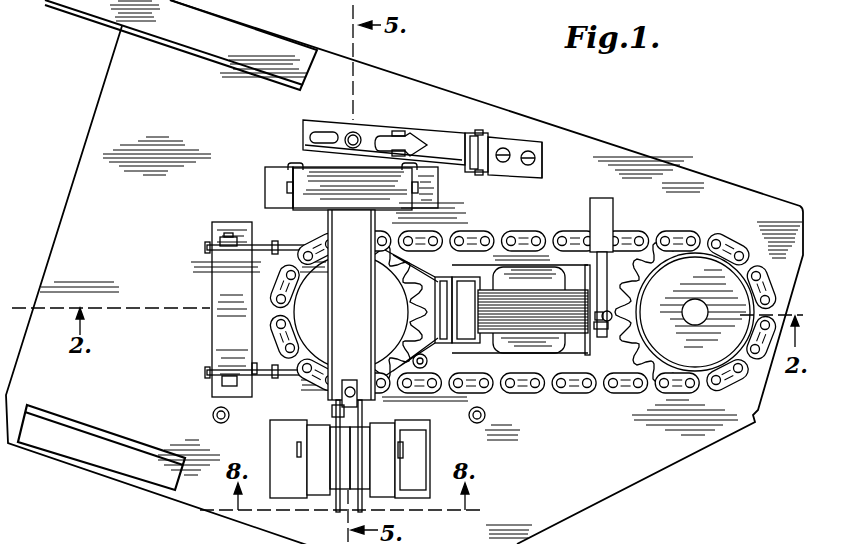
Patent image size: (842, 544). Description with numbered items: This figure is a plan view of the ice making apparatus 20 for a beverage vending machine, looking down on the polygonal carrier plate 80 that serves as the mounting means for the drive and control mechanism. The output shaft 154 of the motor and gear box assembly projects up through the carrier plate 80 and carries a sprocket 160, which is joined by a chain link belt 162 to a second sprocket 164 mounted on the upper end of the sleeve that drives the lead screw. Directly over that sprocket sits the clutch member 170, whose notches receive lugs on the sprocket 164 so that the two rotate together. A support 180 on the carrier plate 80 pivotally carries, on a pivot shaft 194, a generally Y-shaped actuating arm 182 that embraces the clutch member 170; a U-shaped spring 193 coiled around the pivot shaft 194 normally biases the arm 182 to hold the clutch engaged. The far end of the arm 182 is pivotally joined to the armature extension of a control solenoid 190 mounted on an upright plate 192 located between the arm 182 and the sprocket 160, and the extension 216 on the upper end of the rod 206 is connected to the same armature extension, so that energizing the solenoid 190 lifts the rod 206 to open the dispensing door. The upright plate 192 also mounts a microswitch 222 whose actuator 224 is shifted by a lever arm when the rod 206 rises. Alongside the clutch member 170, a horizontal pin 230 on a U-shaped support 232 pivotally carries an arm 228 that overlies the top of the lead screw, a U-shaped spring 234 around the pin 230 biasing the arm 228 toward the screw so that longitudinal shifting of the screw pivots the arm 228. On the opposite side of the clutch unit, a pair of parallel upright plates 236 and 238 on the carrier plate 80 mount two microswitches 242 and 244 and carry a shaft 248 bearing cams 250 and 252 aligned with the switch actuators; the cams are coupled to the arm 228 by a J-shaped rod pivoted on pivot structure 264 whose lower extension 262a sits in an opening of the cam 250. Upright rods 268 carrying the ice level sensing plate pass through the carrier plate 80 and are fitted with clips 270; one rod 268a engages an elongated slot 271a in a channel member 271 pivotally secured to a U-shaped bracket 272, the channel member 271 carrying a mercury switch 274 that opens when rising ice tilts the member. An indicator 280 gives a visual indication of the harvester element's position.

The ice making apparatus 20 is at (620, 139).
The carrier plate 80 is at (588, 500).
The output shaft 154 is at (703, 306).
The sprocket 160 is at (716, 263).
The chain link belt 162 is at (522, 299).
The sprocket 164 is at (325, 250).
The clutch member 170 is at (310, 330).
The support 180 is at (213, 287).
The actuating arm 182 is at (441, 277).
The control solenoid 190 is at (506, 358).
The upright plate 192 is at (604, 320).
The spring 193 is at (275, 255).
The pivot shaft 194 is at (228, 236).
The rod 206 is at (601, 330).
The extension 216 is at (596, 311).
The microswitch 222 is at (612, 211).
The actuator 224 is at (623, 252).
The arm 228 is at (351, 305).
The pin 230 is at (440, 190).
The support 232 is at (272, 168).
The spring 234 is at (326, 222).
The plate 236 is at (303, 431).
The plate 238 is at (403, 424).
The microswitch 242 is at (330, 461).
The microswitch 244 is at (367, 436).
The shaft 248 is at (416, 460).
The cam 250 is at (336, 506).
The cam 252 is at (364, 505).
The extension 262a is at (332, 410).
The pivot structure 264 is at (358, 382).
The rods 268 is at (213, 415).
The rod 268a is at (356, 133).
The clips 270 is at (349, 131).
The channel member 271 is at (457, 136).
The slot 271a is at (325, 131).
The bracket 272 is at (544, 171).
The mercury switch 274 is at (430, 140).
The indicator 280 is at (428, 361).